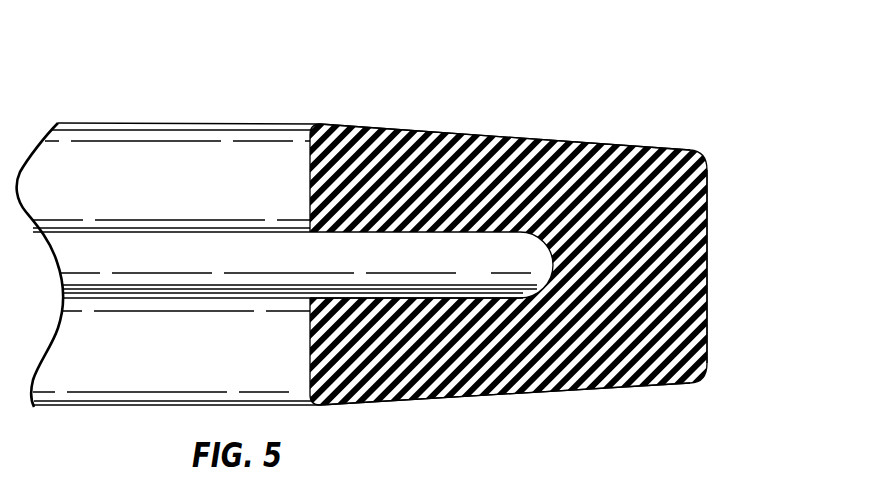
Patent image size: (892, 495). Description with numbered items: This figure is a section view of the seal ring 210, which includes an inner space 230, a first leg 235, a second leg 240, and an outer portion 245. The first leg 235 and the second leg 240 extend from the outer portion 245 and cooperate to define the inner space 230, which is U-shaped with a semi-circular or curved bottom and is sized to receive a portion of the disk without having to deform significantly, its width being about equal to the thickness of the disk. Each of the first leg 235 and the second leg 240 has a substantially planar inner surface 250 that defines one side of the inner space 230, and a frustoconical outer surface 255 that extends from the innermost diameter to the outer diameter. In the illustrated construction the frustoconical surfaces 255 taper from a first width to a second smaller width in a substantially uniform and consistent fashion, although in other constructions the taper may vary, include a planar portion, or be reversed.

The seal ring 210 is at (560, 78).
The inner space 230 is at (370, 260).
The first leg 235 is at (435, 162).
The second leg 240 is at (447, 385).
The outer portion 245 is at (690, 250).
The inner surface 250 is at (437, 232).
The frustoconical outer surface 255 is at (370, 127).